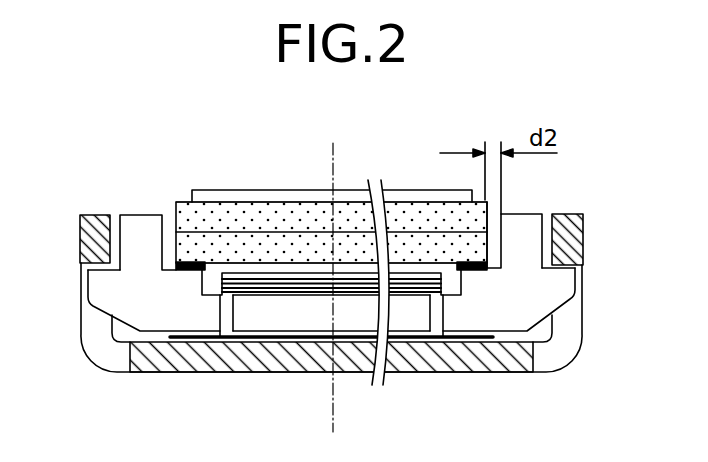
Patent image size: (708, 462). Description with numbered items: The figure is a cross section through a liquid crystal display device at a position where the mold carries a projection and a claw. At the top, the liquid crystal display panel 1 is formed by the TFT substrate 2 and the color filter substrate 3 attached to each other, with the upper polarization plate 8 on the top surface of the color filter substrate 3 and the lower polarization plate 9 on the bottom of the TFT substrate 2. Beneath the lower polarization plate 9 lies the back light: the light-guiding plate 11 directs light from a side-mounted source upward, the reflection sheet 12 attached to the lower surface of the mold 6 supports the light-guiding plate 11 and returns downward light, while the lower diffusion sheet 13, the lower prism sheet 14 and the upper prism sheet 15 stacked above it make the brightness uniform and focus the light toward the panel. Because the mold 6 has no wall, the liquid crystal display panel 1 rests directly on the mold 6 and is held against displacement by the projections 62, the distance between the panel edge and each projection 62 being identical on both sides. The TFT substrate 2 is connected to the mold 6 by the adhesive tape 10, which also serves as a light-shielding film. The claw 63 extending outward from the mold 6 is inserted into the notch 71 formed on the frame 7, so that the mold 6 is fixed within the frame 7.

The liquid crystal display panel 1 is at (182, 192).
The TFT substrate 2 is at (418, 245).
The color filter substrate 3 is at (348, 207).
The mold 6 is at (148, 318).
The frame 7 is at (93, 240).
The upper polarization plate 8 is at (302, 190).
The lower polarization plate 9 is at (248, 267).
The adhesive tape 10 is at (479, 272).
The light-guiding plate 11 is at (258, 320).
The reflection sheet 12 is at (214, 338).
The lower diffusion sheet 13 is at (287, 292).
The lower prism sheet 14 is at (338, 293).
The upper prism sheet 15 is at (357, 280).
The projection 62 is at (145, 232).
The claw 63 is at (100, 290).
The notch 71 is at (567, 345).